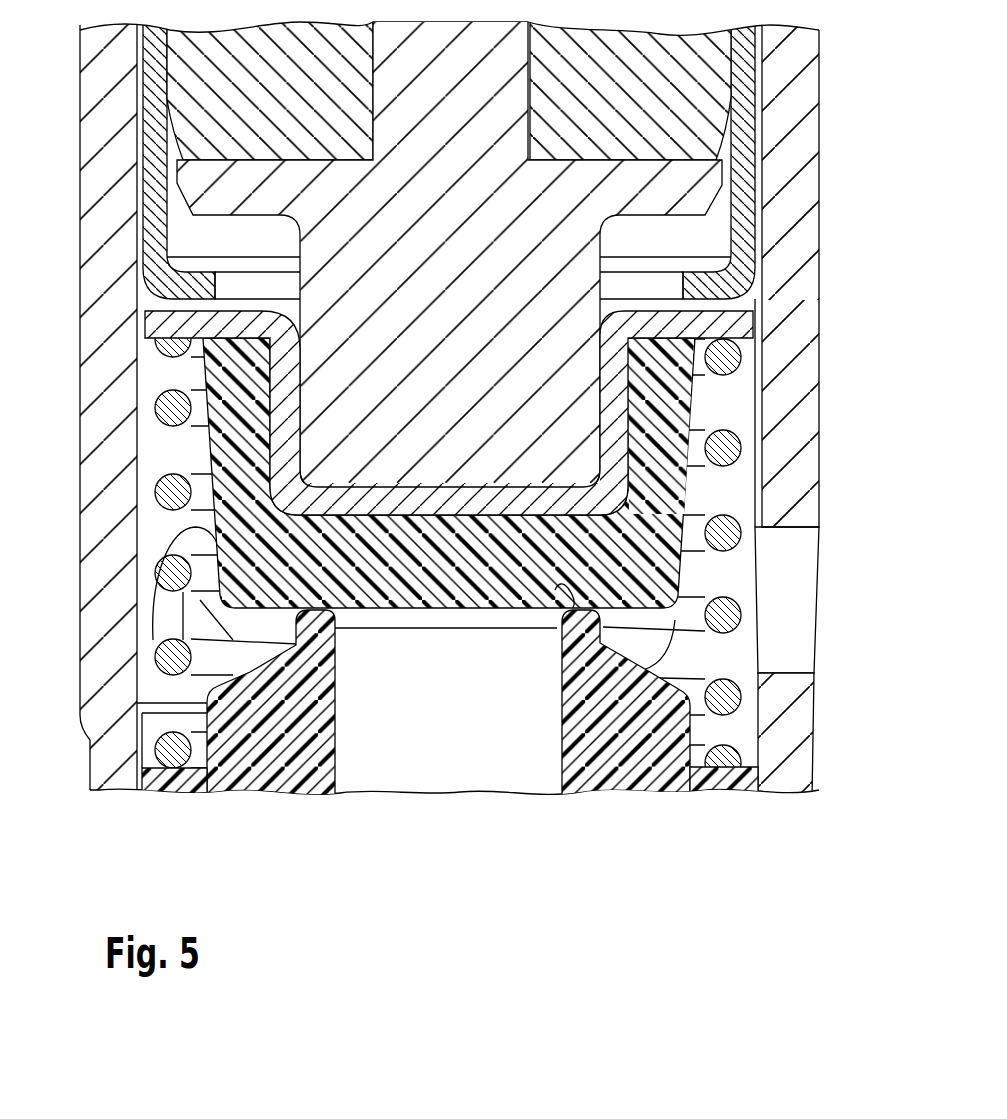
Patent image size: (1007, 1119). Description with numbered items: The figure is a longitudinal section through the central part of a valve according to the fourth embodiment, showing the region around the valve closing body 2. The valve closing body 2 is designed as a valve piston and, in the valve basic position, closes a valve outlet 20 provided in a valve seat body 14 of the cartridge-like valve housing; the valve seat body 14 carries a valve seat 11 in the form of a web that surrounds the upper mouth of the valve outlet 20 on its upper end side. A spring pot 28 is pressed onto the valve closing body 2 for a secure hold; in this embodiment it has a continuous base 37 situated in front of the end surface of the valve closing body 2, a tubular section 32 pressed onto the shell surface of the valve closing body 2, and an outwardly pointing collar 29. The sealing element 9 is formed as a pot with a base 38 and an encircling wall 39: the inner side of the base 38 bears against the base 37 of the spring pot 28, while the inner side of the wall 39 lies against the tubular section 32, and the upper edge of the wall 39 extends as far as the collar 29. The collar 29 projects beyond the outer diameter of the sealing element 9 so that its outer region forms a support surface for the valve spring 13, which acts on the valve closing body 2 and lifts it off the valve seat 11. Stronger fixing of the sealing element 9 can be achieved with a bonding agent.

The valve closing body 2 is at (537, 227).
The sealing element 9 is at (542, 521).
The valve seat 11 is at (555, 590).
The valve spring 13 is at (727, 612).
The valve seat body 14 is at (632, 753).
The valve outlet 20 is at (337, 720).
The spring pot 28 is at (630, 406).
The collar 29 is at (180, 325).
The tubular section 32 is at (283, 441).
The base 37 is at (480, 497).
The base 38 is at (415, 575).
The wall 39 is at (650, 450).